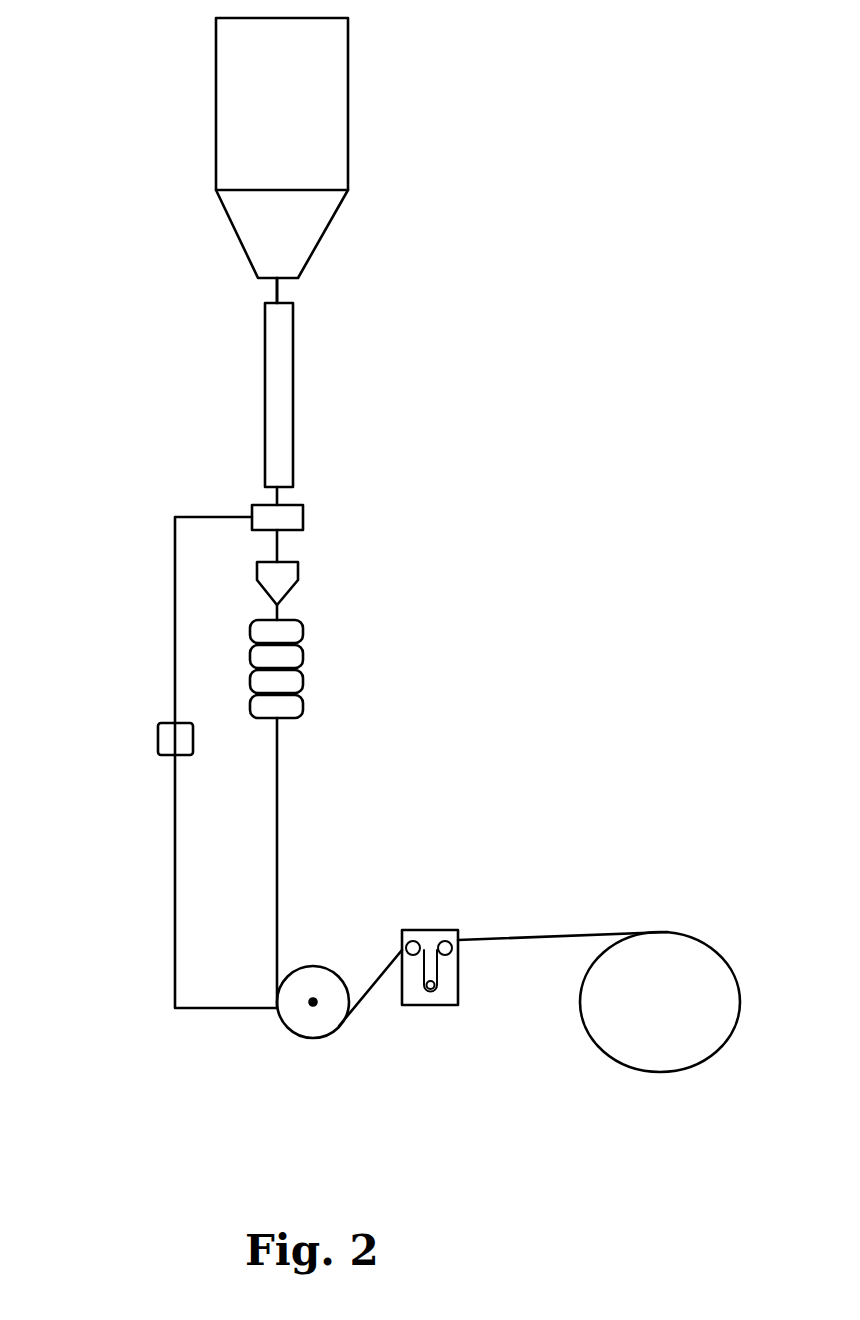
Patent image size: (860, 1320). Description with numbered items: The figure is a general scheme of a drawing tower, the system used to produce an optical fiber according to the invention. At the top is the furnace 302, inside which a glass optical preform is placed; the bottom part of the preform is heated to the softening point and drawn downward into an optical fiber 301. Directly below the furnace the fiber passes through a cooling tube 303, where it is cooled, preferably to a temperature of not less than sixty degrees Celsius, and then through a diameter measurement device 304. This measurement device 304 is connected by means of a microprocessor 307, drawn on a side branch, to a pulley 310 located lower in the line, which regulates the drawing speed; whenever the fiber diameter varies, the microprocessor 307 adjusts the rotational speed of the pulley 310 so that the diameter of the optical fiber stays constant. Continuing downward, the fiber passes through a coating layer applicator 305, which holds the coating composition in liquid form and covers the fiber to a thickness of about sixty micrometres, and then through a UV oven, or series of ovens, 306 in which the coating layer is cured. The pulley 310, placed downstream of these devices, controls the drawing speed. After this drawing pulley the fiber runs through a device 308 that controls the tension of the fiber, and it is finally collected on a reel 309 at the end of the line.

The optical fiber 301 is at (278, 296).
The furnace 302 is at (330, 158).
The cooling tube 303 is at (280, 408).
The diameter measurement device 304 is at (288, 518).
The coating layer applicator 305 is at (285, 580).
The UV oven 306 is at (290, 705).
The microprocessor 307 is at (172, 742).
The tension control device 308 is at (432, 940).
The reel 309 is at (665, 958).
The pulley 310 is at (290, 1014).